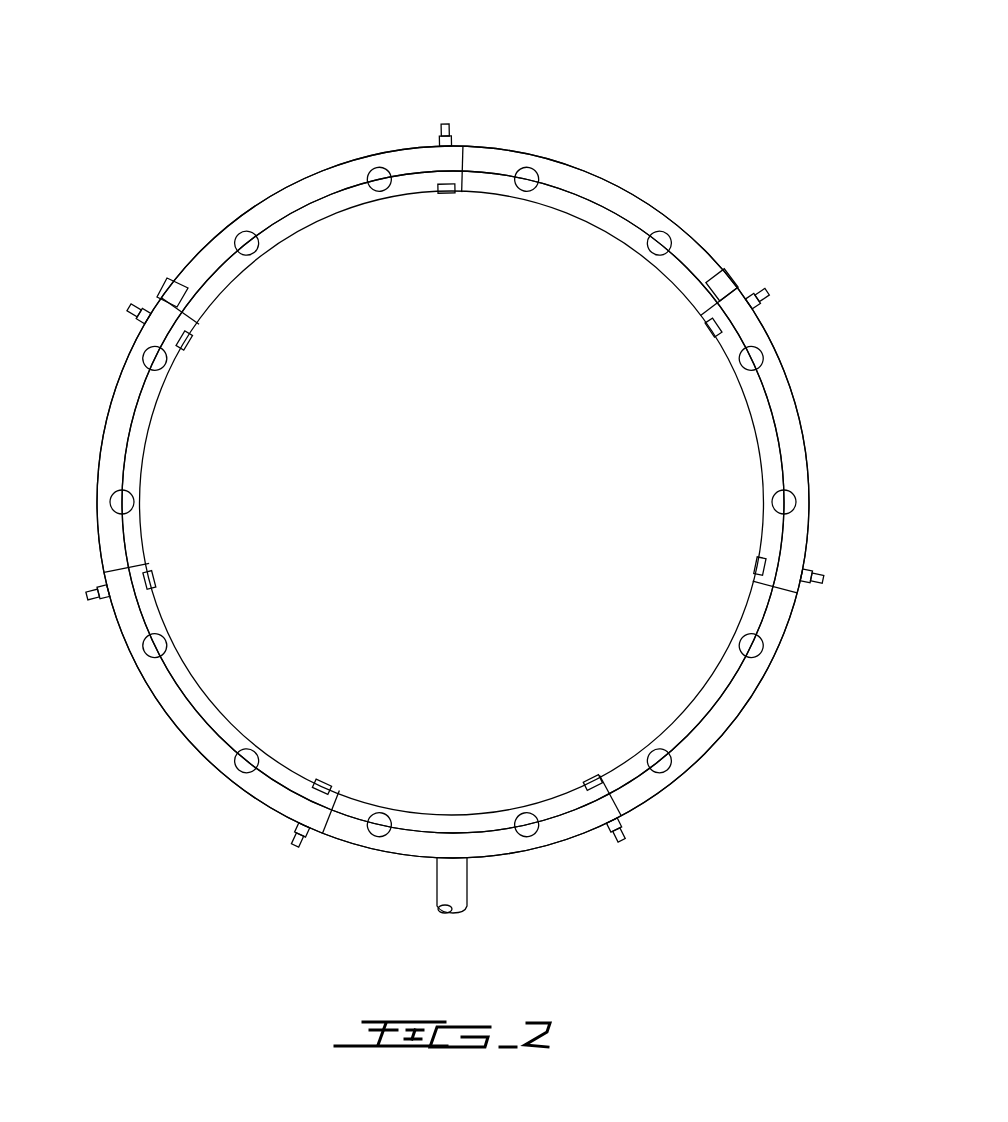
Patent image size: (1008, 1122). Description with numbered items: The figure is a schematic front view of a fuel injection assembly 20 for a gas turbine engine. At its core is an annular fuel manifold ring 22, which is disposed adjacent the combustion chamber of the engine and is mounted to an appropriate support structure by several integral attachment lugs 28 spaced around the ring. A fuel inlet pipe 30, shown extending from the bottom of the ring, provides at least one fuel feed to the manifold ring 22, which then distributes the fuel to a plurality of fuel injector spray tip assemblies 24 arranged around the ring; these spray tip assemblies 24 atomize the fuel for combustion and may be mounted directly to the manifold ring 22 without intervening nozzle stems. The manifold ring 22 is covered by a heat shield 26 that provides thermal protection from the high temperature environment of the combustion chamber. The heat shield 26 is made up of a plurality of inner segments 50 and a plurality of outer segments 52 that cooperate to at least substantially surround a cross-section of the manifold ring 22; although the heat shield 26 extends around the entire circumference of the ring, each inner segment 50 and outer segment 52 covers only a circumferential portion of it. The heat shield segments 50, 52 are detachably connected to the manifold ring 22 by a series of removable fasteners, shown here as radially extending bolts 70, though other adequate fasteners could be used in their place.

The fuel injection assembly 20 is at (278, 157).
The annular fuel manifold ring 22 is at (338, 182).
The fuel injector spray tip assemblies 24 is at (525, 180).
The heat shield 26 is at (92, 418).
The integral attachment lugs 28 is at (173, 290).
The fuel inlet pipe 30 is at (453, 888).
The inner segments 50 is at (575, 207).
The outer segments 52 is at (797, 524).
The radially extending bolts 70 is at (443, 125).